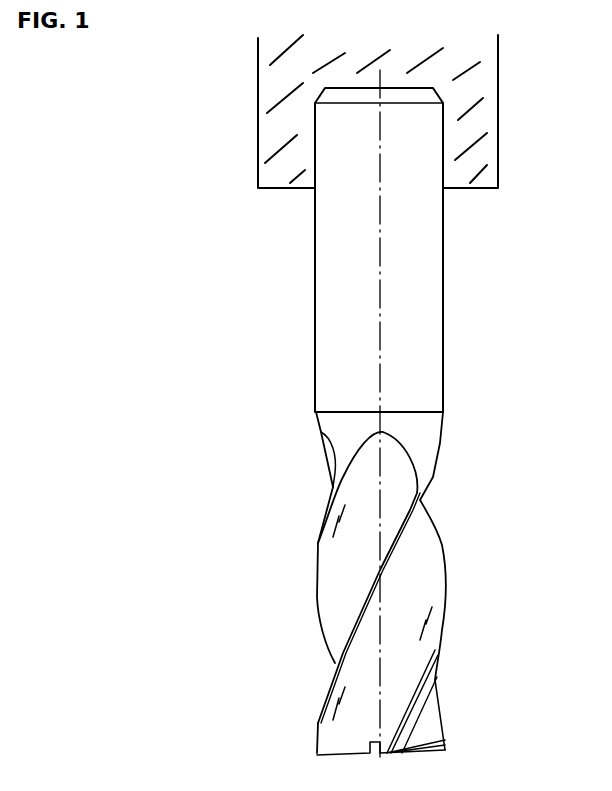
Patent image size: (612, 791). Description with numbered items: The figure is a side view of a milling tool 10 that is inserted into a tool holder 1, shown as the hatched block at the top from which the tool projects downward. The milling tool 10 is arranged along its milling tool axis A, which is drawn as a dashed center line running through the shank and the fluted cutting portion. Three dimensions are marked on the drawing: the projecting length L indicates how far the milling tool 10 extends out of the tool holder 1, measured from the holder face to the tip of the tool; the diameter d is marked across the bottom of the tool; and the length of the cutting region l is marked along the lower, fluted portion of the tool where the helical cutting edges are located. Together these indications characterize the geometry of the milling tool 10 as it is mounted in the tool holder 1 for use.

The tool holder / workpiece 1 is at (483, 120).
The milling tool 10 is at (430, 345).
The milling tool axis A is at (380, 262).
The projecting length L is at (288, 191).
The length of the cutting region l is at (467, 754).
The diameter d is at (446, 765).